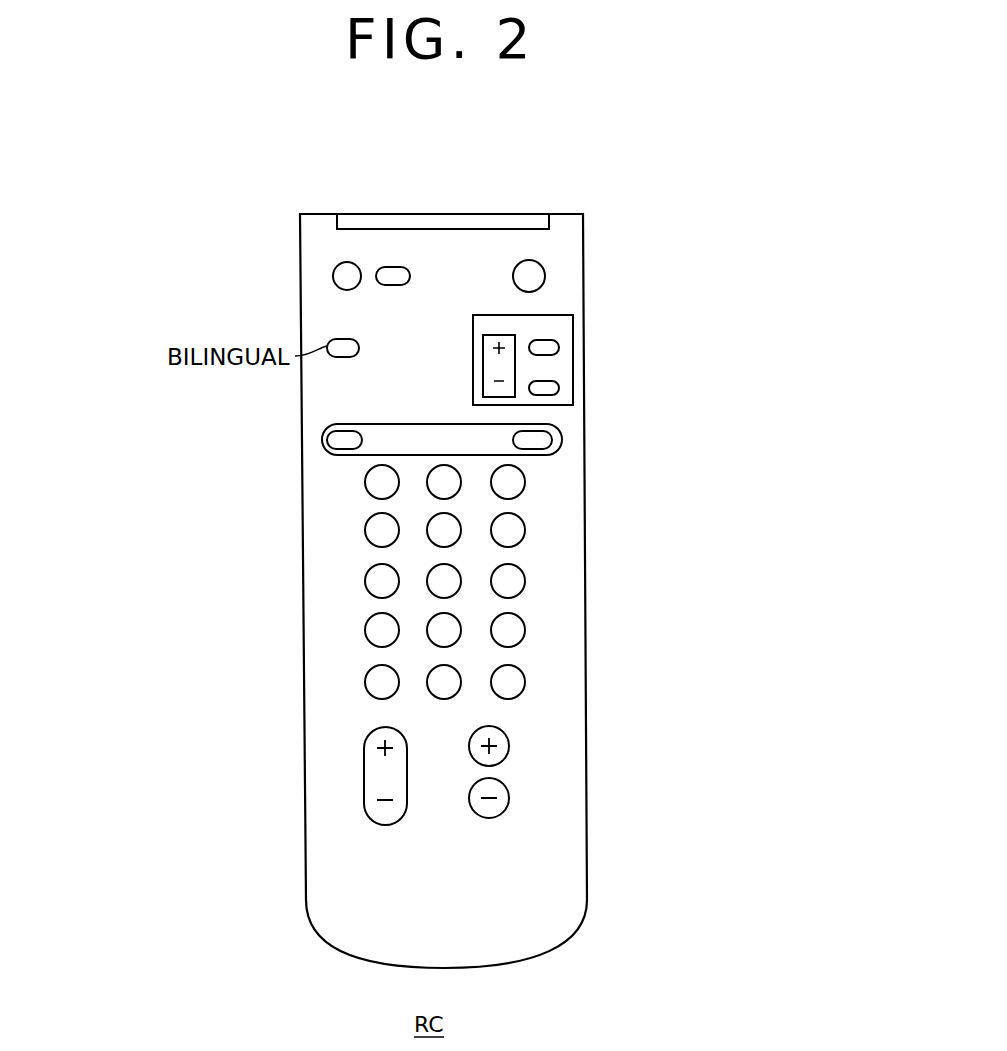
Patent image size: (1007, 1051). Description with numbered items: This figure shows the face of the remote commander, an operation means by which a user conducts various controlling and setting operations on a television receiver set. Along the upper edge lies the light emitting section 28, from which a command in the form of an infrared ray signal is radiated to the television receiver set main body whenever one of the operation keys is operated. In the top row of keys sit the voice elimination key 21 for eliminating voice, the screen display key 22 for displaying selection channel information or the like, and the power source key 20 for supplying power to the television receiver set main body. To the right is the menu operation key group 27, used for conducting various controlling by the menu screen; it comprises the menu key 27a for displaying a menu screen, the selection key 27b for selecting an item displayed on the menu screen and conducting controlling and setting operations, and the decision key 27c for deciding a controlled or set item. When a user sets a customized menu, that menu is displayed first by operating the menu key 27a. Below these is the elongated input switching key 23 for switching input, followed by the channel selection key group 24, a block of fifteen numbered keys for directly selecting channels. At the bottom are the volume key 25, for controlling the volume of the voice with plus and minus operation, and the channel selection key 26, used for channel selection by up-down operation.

The power source key 20 is at (546, 268).
The voice elimination key 21 is at (334, 270).
The screen display key 22 is at (383, 285).
The input switching key 23 is at (322, 441).
The channel selection key group 24 is at (532, 620).
The volume key 25 is at (364, 743).
The channel selection key 26 is at (513, 768).
The menu operation key group 27 is at (573, 355).
The menu key 27a is at (558, 346).
The selection key 27b is at (513, 337).
The decision key 27c is at (559, 389).
The light emitting section 28 is at (448, 213).